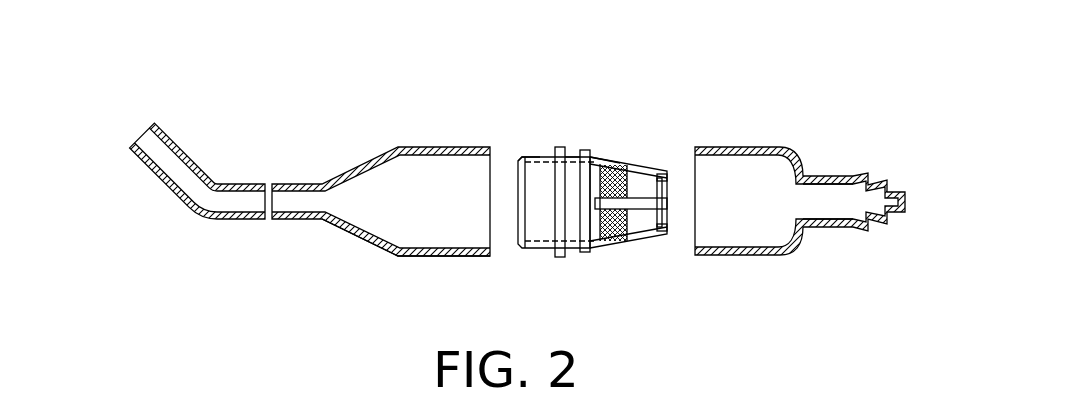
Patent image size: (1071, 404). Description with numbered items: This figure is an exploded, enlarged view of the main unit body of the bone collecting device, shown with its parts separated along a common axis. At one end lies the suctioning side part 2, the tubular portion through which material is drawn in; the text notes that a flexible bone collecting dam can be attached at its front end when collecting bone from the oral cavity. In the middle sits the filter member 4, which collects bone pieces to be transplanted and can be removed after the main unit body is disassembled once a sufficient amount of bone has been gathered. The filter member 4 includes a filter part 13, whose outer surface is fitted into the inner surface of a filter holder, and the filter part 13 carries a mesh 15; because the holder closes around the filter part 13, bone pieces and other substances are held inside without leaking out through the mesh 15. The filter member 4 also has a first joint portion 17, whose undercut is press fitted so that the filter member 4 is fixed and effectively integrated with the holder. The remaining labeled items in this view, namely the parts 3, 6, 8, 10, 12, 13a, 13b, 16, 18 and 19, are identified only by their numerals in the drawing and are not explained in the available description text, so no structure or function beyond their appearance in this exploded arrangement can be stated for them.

The suctioning side part 2 is at (356, 165).
The fitting 3 is at (792, 151).
The filter member 4 is at (606, 155).
The tapered hose portion 6 is at (367, 219).
The barbed bore 8 is at (827, 207).
The hose assembly 10 is at (697, 50).
The first section 12 is at (518, 259).
The filter part 13 is at (588, 259).
The engaging projections 13a is at (645, 163).
The end wall 13b is at (664, 178).
The mesh 15 is at (617, 164).
The first flange 16 is at (558, 148).
The first joint portion 17 is at (577, 156).
The second flange 18 is at (584, 150).
The chamfered end 19 is at (533, 157).